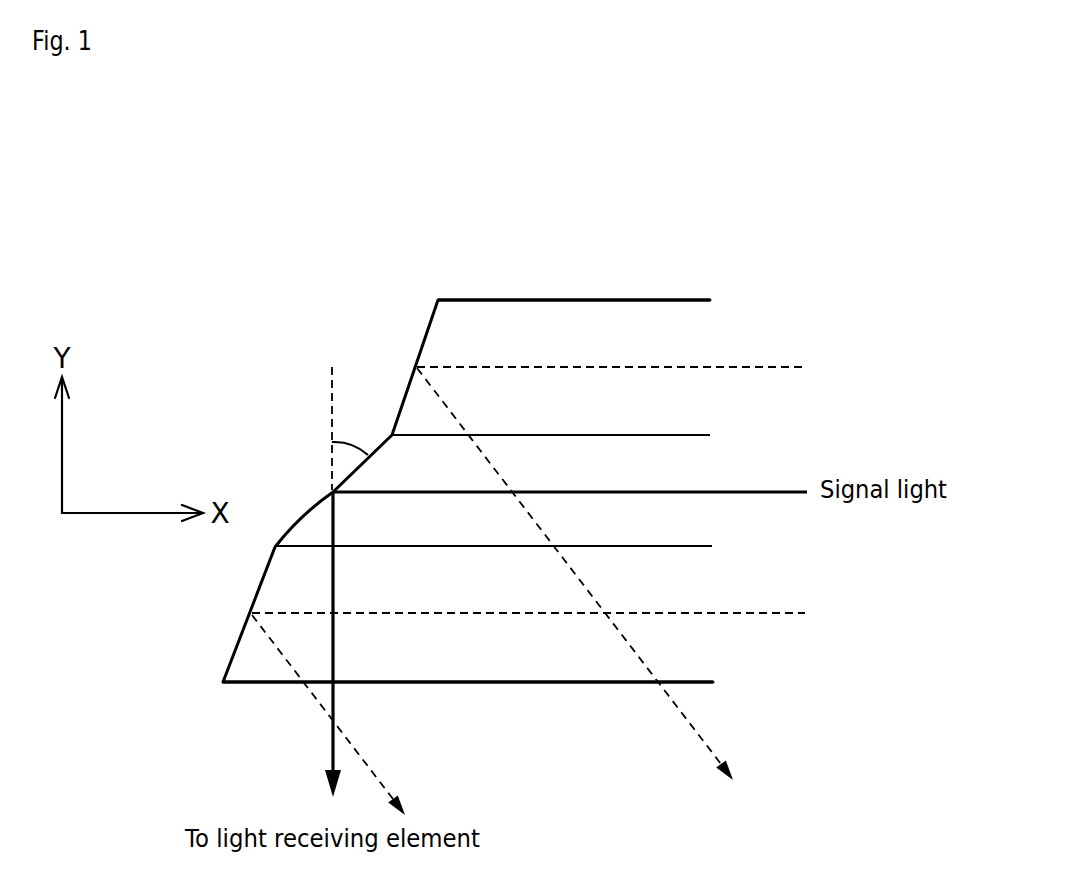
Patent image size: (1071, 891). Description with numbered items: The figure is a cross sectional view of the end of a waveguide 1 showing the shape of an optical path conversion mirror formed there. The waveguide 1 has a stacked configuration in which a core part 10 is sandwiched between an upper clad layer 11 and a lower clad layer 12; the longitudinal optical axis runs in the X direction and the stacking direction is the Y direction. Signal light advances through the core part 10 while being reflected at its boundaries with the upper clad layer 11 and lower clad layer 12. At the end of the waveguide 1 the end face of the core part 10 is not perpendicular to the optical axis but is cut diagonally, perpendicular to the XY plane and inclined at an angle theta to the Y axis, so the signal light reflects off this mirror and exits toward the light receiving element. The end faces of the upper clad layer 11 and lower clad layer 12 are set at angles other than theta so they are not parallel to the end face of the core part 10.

The waveguide 1 is at (515, 492).
The core part 10 is at (515, 526).
The upper clad layer 11 is at (505, 310).
The lower clad layer 12 is at (530, 678).